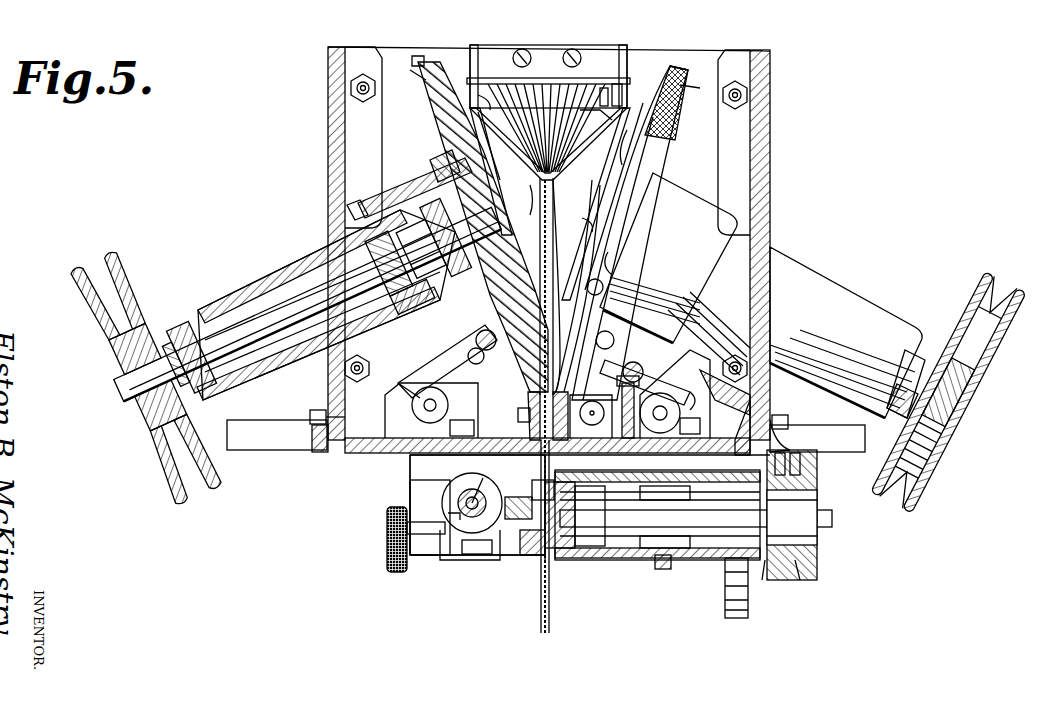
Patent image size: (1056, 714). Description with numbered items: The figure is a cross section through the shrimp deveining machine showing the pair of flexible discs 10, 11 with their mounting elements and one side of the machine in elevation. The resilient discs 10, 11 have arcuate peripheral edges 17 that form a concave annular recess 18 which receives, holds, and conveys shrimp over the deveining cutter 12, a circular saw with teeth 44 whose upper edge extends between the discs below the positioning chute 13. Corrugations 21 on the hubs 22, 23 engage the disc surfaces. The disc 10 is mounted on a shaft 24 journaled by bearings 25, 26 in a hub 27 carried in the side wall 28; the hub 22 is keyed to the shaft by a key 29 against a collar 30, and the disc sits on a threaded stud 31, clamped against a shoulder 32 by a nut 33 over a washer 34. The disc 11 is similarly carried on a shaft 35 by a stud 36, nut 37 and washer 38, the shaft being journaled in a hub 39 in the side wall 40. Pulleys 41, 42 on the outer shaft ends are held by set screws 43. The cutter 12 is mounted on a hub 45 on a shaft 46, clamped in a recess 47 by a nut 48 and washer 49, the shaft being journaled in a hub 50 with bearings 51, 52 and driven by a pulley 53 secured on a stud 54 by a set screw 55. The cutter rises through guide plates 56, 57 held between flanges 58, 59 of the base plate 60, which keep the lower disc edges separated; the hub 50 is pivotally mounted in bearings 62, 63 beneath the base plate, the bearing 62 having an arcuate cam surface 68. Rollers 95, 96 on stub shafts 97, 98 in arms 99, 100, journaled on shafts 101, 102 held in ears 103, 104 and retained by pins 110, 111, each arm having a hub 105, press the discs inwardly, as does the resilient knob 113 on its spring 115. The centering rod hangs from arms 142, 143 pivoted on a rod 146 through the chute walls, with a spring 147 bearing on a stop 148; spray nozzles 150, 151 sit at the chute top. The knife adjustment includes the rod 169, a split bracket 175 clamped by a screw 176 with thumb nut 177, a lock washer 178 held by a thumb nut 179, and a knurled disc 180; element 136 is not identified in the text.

The flexible disc 10 is at (416, 70).
The flexible disc 11 is at (680, 70).
The deveining cutter 12 is at (540, 605).
The positioning chute 13 is at (548, 101).
The arcuate peripheral edges 17 is at (416, 84).
The concave annular recess 18 is at (437, 90).
The corrugations 21 is at (436, 166).
The hub 22 is at (398, 200).
The hub 23 is at (688, 190).
The shaft 24 is at (303, 322).
The bearing 25 is at (358, 203).
The bearing 26 is at (185, 318).
The hub 27 is at (253, 280).
The side wall 28 is at (330, 119).
The key 29 is at (435, 248).
The collar 30 is at (450, 246).
The threaded stud 31 is at (483, 226).
The shoulder 32 is at (435, 296).
The nut 33 is at (497, 171).
The washer 34 is at (476, 110).
The shaft 35 is at (960, 408).
The stud 36 is at (578, 282).
The nut 37 is at (602, 201).
The washer 38 is at (632, 122).
The hub 39 is at (848, 302).
The side wall 40 is at (770, 168).
The pulley 41 is at (92, 316).
The pulley 42 is at (1020, 296).
The set screws 43 is at (158, 330).
The teeth 44 is at (548, 290).
The hub 45 is at (550, 560).
The shaft 46 is at (660, 532).
The recess 47 is at (568, 558).
The nut 48 is at (514, 556).
The washer 49 is at (529, 550).
The hub 50 is at (686, 568).
The bearing 51 is at (596, 534).
The bearing 52 is at (761, 576).
The pulley 53 is at (818, 490).
The stud 54 is at (820, 517).
The set screw 55 is at (796, 576).
The guide plate 56 is at (528, 397).
The guide plate 57 is at (548, 332).
The flange 58 is at (518, 416).
The flange 59 is at (614, 407).
The base plate 60 is at (378, 460).
The bearing 62 is at (785, 465).
The bearing 63 is at (590, 466).
The arcuate cam surface 68 is at (732, 619).
The roller 95 is at (478, 333).
The roller 96 is at (614, 340).
The stub shaft 97 is at (468, 354).
The stub shaft 98 is at (638, 364).
The arm 99 is at (452, 362).
The arm 100 is at (672, 396).
The shaft 101 is at (412, 400).
The shaft 102 is at (682, 408).
The ear 103 is at (408, 415).
The ear 104 is at (681, 426).
The hub 105 is at (592, 419).
The pin 110 is at (406, 381).
The pin 111 is at (702, 387).
The resilient knob 113 is at (604, 282).
The spring 115 is at (614, 296).
The arm end 136 is at (664, 56).
The arm 142 is at (502, 98).
The arm 143 is at (592, 117).
The rod 146 is at (494, 78).
The spring 147 is at (617, 84).
The stop 148 is at (600, 98).
The spray nozzle 150 is at (522, 49).
The spray nozzle 151 is at (576, 50).
The rod 169 is at (490, 477).
The split bracket 175 is at (478, 556).
The screw 176 is at (458, 562).
The thumb nut 177 is at (387, 555).
The lock washer 178 is at (452, 494).
The thumb nut 179 is at (448, 512).
The knurled disc 180 is at (410, 488).